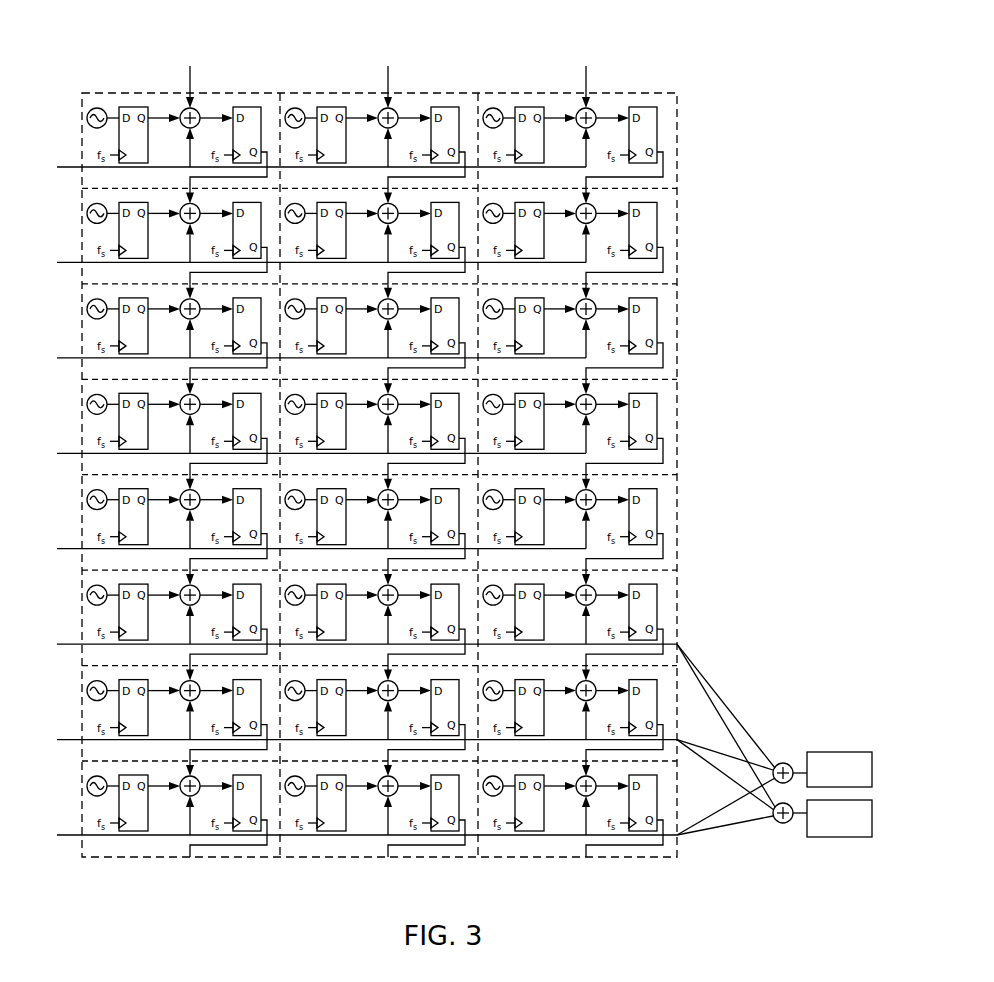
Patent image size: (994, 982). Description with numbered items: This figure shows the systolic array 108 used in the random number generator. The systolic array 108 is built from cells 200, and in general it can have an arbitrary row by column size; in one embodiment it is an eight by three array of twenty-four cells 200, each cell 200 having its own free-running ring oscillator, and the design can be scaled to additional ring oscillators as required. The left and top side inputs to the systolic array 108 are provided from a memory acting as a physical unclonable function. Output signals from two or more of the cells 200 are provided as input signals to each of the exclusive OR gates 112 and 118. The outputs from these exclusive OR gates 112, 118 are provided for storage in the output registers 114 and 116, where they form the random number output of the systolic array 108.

The cells 200 is at (677, 222).
The systolic array 108 is at (705, 442).
The exclusive OR gate 112 is at (783, 762).
The output register 114 is at (833, 752).
The output register 116 is at (822, 837).
The exclusive OR gate 118 is at (778, 824).